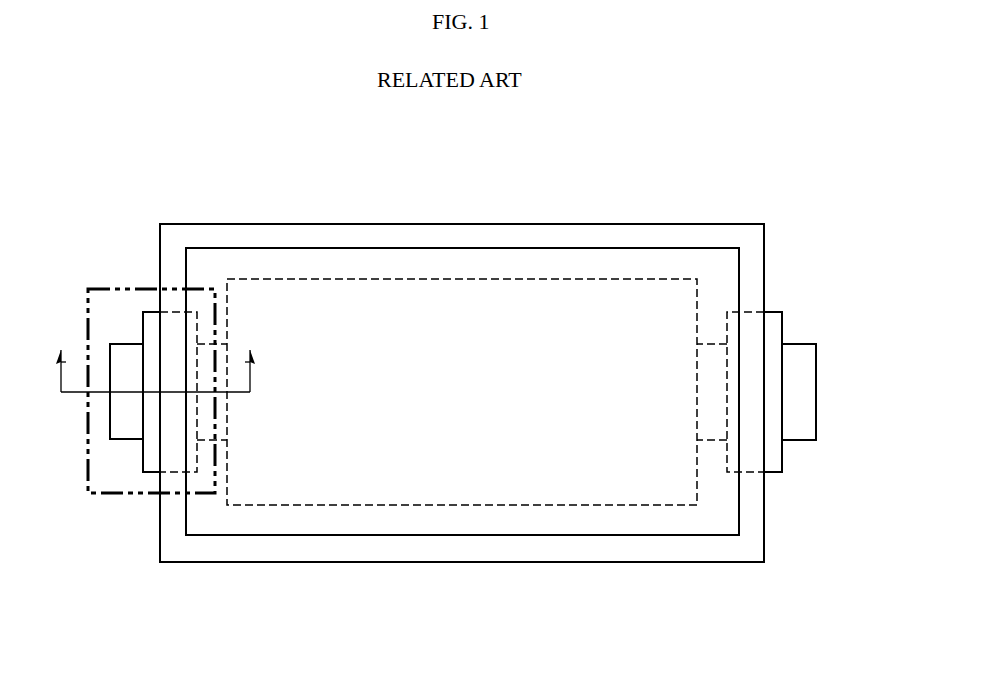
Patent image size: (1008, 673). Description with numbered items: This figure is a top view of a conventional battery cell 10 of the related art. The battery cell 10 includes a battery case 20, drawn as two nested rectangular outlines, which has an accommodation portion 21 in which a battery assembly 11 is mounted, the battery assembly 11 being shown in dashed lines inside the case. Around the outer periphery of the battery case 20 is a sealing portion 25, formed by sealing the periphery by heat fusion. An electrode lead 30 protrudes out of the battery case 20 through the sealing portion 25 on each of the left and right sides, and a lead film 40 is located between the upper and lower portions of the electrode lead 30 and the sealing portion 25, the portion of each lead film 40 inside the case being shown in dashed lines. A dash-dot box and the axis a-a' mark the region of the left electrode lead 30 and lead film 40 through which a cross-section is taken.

The battery cell 10 is at (180, 154).
The battery assembly 11 is at (478, 278).
The battery case 20 is at (462, 433).
The accommodation portion 21 is at (507, 603).
The sealing portion 25 is at (487, 543).
The electrode lead 30 is at (115, 424).
The lead film 40 is at (147, 457).